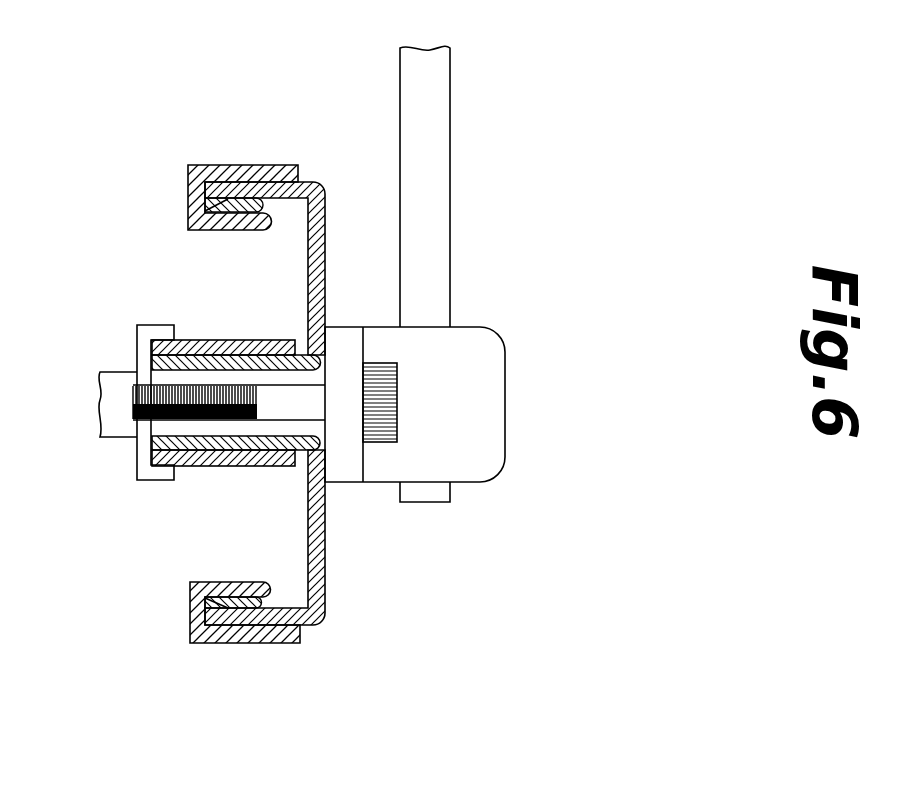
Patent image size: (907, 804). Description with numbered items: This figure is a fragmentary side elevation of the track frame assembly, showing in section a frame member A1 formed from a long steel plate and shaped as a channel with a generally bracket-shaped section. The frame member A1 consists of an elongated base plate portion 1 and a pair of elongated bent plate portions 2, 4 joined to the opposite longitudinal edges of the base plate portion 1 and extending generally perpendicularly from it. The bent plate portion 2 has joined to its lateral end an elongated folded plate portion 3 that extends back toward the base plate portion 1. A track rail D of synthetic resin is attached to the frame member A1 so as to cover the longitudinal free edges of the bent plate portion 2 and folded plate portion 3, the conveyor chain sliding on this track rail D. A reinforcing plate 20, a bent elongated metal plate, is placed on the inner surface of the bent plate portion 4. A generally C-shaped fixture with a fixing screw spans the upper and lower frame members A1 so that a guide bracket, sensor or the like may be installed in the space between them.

The base plate portion 1 is at (325, 268).
The frame member A1 is at (344, 359).
The bent plate portion 2 is at (247, 166).
The track rail D is at (214, 392).
The folded plate portion 3 is at (226, 230).
The reinforcing plate 20 is at (227, 340).
The bent plate portion 4 is at (203, 340).